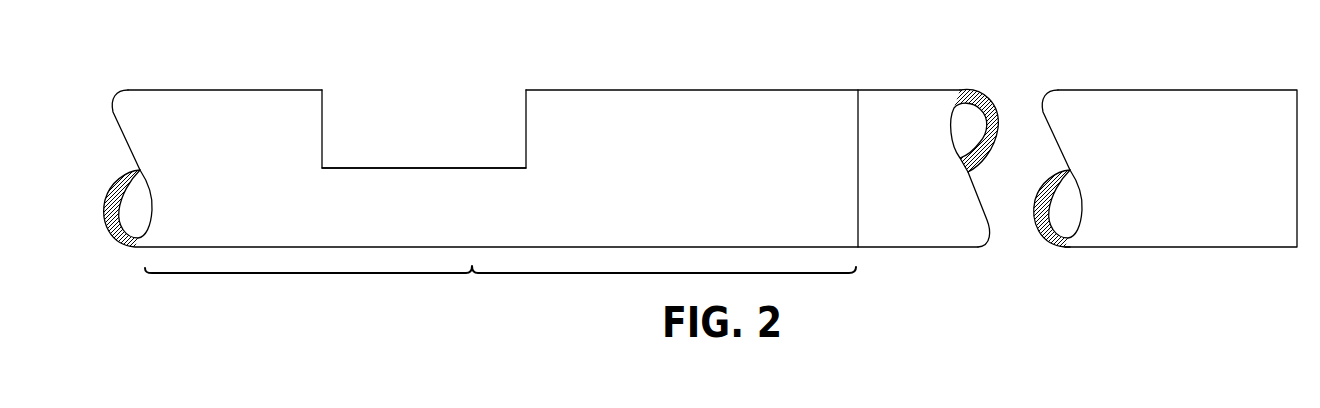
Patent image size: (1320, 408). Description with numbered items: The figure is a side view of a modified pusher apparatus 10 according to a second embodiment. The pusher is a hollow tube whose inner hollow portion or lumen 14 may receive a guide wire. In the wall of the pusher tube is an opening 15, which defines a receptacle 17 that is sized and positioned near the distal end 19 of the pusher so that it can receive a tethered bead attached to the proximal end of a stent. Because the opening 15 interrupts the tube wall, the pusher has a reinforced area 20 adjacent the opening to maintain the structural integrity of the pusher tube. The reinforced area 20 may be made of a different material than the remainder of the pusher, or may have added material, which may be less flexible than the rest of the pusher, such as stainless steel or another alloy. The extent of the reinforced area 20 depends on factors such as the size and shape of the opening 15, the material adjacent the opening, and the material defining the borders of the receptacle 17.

The modified pusher apparatus 10 is at (737, 80).
The lumen 14 is at (980, 168).
The opening 15 is at (390, 168).
The receptacle 17 is at (447, 92).
The distal end 19 is at (1298, 222).
The reinforced area 20 is at (500, 287).